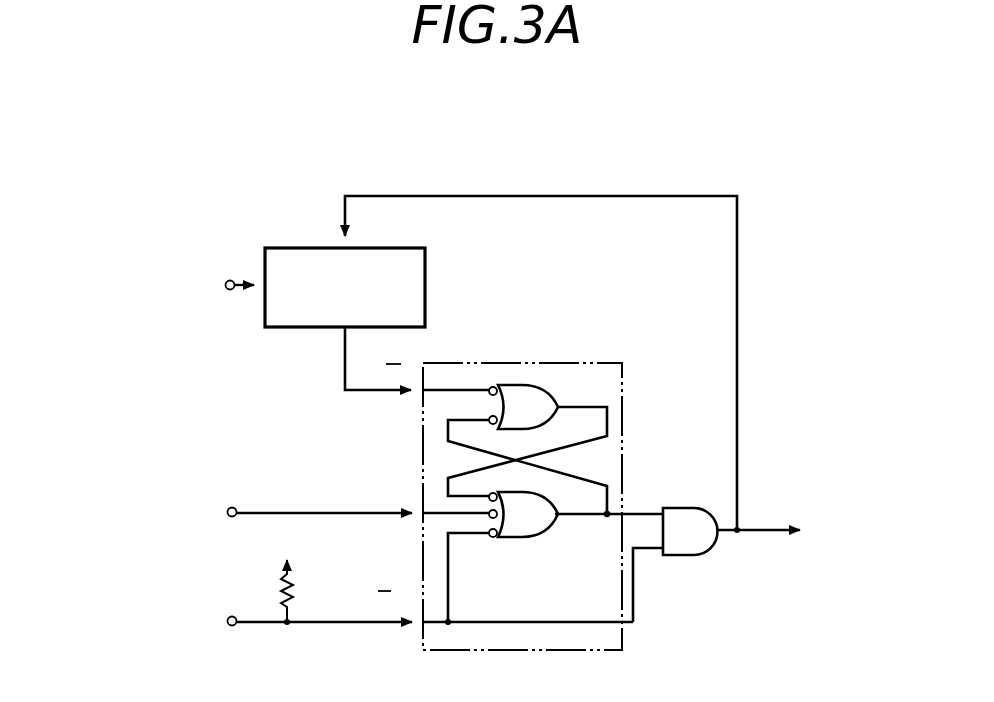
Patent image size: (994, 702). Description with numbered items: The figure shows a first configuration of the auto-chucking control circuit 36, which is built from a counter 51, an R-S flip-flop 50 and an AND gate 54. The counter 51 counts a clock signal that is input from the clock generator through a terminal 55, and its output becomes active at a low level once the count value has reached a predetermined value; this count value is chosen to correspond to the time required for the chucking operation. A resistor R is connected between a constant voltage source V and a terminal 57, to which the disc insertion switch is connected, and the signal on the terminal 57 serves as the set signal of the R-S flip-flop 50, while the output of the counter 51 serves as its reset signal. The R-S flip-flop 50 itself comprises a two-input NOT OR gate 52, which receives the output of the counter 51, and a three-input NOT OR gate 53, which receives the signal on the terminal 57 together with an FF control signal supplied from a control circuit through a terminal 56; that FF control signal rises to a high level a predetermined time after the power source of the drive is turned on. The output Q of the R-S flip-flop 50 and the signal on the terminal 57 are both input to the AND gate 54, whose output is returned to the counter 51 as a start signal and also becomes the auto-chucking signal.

The auto-chucking control circuit 36 is at (566, 158).
The R-S flip-flop 50 is at (521, 362).
The counter 51 is at (426, 290).
The NOT OR gate 52 is at (553, 396).
The NOT OR gate 53 is at (523, 534).
The AND gate 54 is at (678, 510).
The terminal 55 is at (230, 279).
The terminal 56 is at (238, 505).
The terminal 57 is at (234, 615).